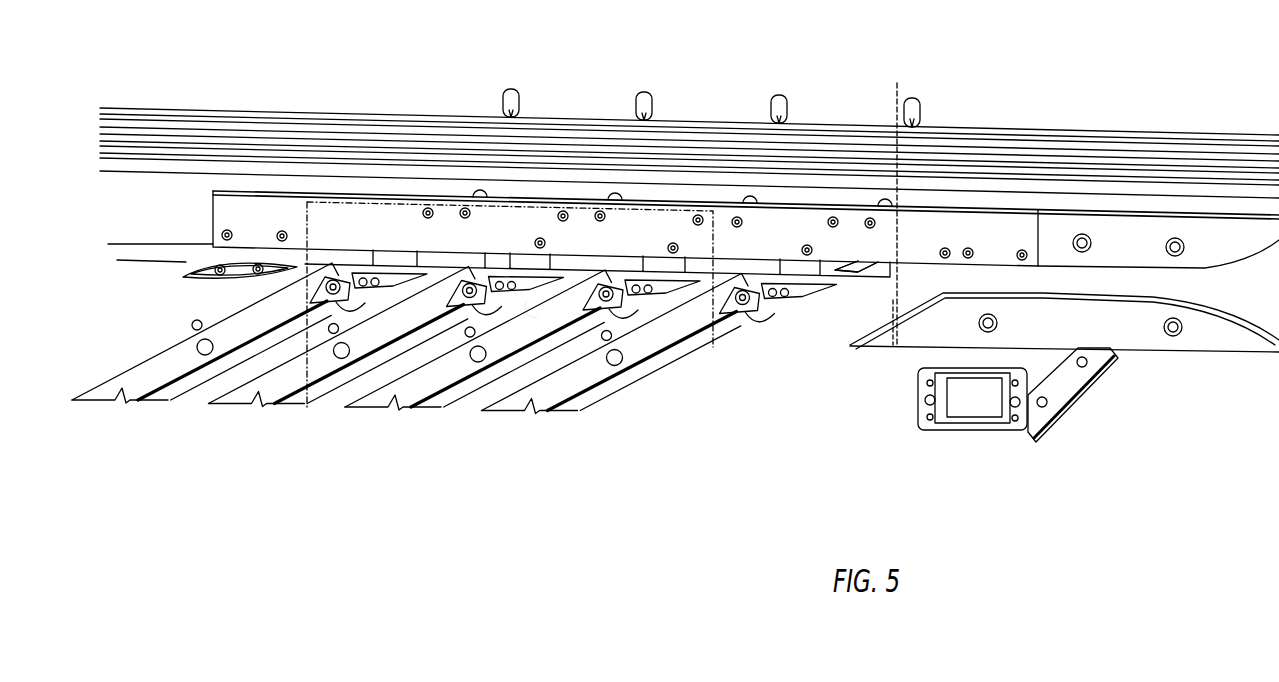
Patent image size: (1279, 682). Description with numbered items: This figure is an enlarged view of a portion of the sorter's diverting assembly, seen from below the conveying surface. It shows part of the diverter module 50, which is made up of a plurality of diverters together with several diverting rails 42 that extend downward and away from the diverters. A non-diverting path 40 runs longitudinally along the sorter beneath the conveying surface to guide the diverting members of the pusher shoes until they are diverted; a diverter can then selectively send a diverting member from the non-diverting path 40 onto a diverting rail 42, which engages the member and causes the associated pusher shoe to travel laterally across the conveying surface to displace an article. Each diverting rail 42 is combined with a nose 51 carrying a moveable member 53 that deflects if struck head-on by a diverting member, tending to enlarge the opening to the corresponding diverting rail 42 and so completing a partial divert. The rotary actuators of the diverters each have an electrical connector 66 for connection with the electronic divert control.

The non-diverting path 40 is at (130, 247).
The diverting rail 42 is at (227, 357).
The diverter module 50 is at (377, 186).
The nose 51 is at (840, 285).
The moveable member 53 is at (526, 302).
The electrical connector 66 is at (509, 84).